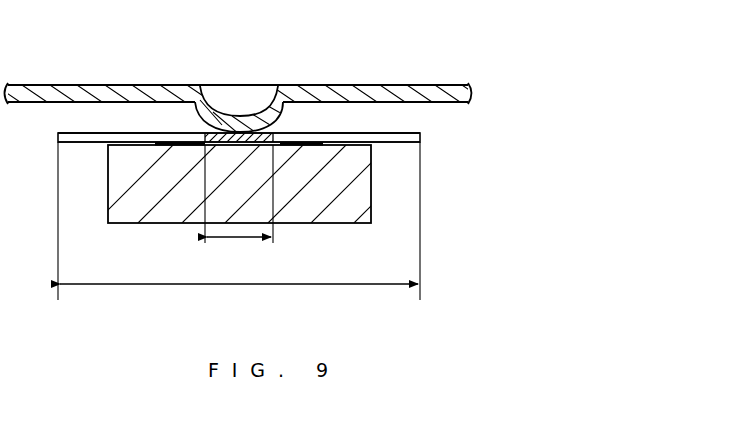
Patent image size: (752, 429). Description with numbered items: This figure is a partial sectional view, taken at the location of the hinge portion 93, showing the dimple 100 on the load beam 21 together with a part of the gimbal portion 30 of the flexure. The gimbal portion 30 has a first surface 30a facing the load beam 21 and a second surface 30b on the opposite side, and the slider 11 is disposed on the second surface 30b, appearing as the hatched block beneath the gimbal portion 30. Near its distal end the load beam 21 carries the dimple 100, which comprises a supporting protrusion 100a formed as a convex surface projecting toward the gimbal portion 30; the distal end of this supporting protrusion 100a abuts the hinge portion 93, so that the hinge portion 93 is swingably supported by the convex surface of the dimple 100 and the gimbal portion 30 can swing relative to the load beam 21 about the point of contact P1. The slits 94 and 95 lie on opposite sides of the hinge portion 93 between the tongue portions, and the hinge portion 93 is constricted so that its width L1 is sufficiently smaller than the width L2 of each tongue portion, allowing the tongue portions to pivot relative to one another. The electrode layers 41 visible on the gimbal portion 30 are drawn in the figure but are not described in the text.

The slider 11 is at (333, 212).
The load beam 21 is at (398, 95).
The gimbal portion 30 is at (448, 140).
The first surface 30a is at (343, 133).
The second surface 30b is at (387, 144).
The electrode 41 is at (173, 142).
The hinge portion 93 is at (228, 131).
The slit 94 is at (355, 132).
The slit 95 is at (133, 132).
The dimple 100 is at (239, 115).
The supporting protrusion 100a is at (279, 95).
The point of contact P1 is at (240, 134).
The width of the hinge portion L1 is at (240, 239).
The width of the tongue portion L2 is at (212, 286).